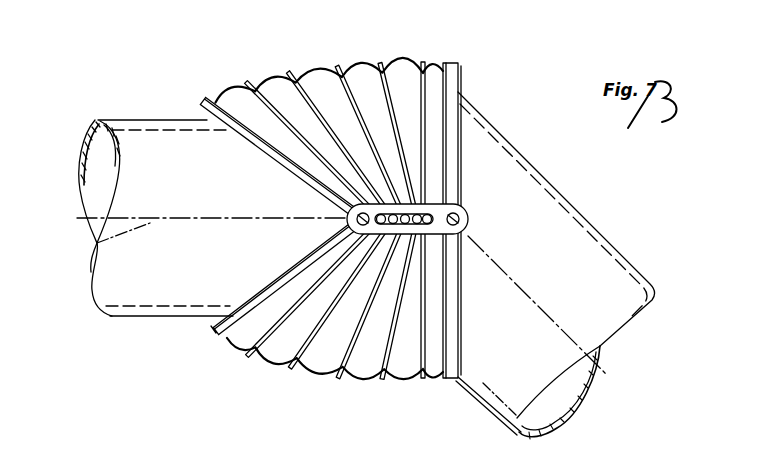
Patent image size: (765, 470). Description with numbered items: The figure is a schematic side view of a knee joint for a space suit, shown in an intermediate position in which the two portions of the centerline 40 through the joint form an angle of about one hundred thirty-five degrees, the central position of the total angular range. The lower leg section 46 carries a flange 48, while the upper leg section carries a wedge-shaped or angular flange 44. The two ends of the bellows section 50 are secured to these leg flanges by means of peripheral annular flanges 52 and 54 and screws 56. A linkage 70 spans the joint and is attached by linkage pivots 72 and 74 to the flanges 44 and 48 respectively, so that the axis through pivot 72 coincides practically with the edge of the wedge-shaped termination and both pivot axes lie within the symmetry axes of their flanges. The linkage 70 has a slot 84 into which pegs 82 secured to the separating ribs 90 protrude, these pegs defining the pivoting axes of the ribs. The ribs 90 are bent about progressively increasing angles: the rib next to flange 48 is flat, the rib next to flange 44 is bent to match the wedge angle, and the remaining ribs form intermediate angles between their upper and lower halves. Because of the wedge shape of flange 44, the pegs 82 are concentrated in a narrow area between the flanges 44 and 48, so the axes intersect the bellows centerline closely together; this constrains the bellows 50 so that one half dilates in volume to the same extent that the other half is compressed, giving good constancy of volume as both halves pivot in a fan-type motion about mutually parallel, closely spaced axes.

The centerline 40 is at (96, 245).
The lower leg section 46 is at (613, 244).
The flange 44 is at (200, 103).
The flange 48 is at (453, 80).
The bellows section 50 is at (274, 376).
The peripheral annular flange 52 is at (211, 334).
The peripheral annular flange 54 is at (447, 63).
The screws 56 is at (221, 93).
The linkage 70 is at (412, 207).
The linkage pivot 72 is at (356, 224).
The linkage pivot 74 is at (460, 219).
The pegs 82 is at (393, 224).
The slot 84 is at (384, 231).
The ribs 90 is at (330, 90).